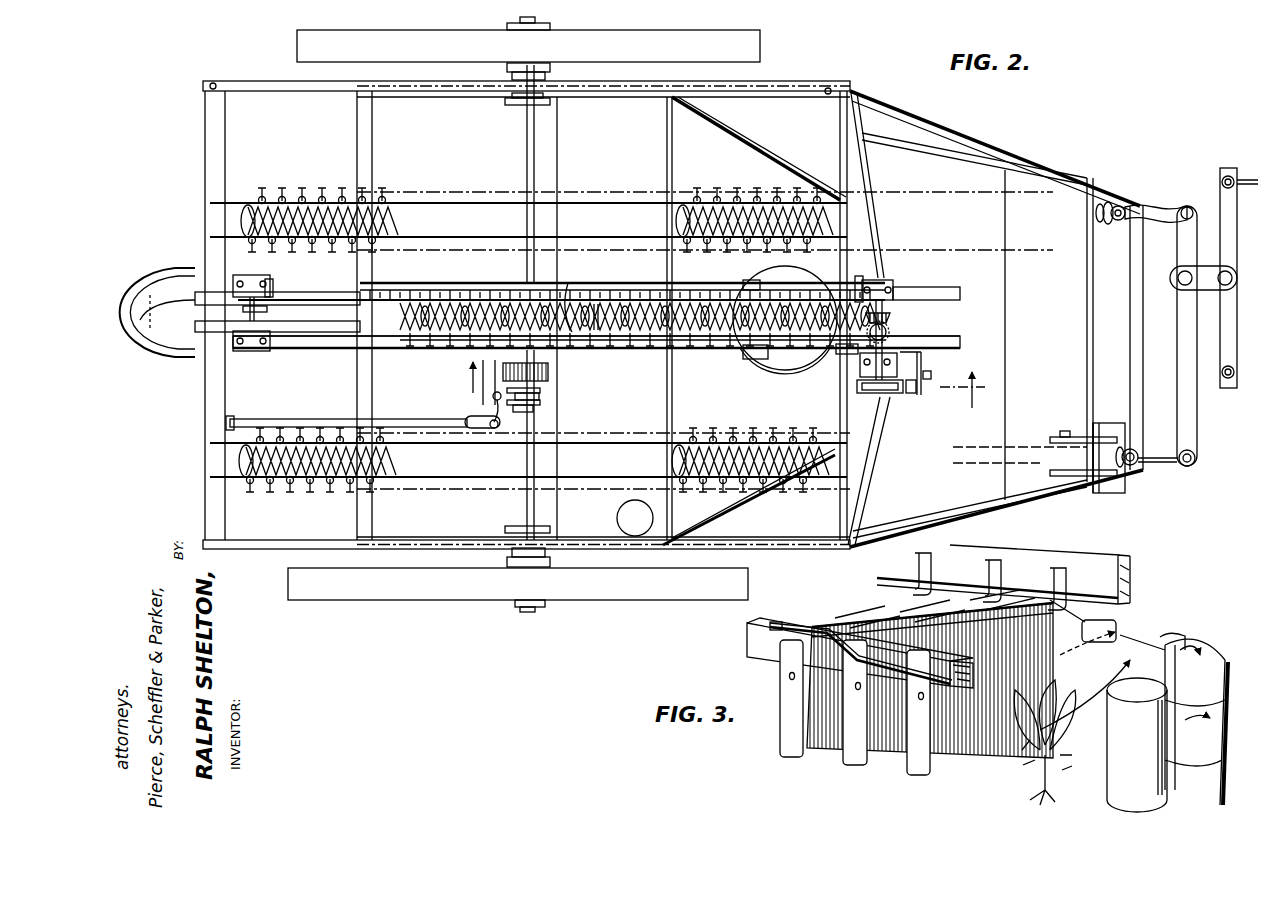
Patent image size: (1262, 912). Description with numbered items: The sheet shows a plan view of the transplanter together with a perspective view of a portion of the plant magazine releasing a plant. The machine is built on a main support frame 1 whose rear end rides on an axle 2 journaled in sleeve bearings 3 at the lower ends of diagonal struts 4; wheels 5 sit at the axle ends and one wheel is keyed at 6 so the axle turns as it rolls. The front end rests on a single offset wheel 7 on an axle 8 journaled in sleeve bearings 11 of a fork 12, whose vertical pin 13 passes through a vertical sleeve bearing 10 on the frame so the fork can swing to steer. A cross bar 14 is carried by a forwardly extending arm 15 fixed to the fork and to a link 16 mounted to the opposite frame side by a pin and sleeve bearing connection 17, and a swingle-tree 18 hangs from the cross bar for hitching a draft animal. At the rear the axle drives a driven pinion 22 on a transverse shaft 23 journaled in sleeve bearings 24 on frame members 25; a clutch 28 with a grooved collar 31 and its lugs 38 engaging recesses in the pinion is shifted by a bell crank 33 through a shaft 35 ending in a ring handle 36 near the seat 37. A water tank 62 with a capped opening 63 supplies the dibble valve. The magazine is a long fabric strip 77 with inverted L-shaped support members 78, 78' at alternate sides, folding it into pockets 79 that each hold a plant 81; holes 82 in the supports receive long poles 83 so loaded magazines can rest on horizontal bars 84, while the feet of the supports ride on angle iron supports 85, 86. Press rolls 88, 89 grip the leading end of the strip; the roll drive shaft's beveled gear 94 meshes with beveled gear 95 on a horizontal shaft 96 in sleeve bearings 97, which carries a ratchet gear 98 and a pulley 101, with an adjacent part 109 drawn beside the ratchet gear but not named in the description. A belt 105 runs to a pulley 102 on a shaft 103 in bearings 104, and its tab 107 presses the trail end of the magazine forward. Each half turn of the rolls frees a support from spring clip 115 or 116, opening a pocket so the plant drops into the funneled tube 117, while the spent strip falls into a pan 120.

In FIG. 2, the main support frame 1 is at (262, 83).
In FIG. 2, the axle 2 is at (526, 137).
In FIG. 2, the sleeve bearings 3 is at (507, 103).
In FIG. 2, the diagonal struts 4 is at (472, 376).
In FIG. 2, the wheels 5 is at (306, 39).
In FIG. 2, the key 6 is at (522, 610).
In FIG. 2, the single wheel 7 is at (986, 446).
In FIG. 2, the axle 8 is at (1063, 432).
In FIG. 2, the vertical sleeve bearing 10 is at (1108, 494).
In FIG. 2, the sleeve bearings 11 is at (1050, 438).
In FIG. 2, the fork 12 is at (1107, 423).
In FIG. 2, the vertical pin 13 is at (1134, 467).
In FIG. 2, the cross bar 14 is at (1177, 360).
In FIG. 2, the forwardly extending arm 15 is at (1158, 458).
In FIG. 2, the link 16 is at (1163, 208).
In FIG. 2, the pin and sleeve bearing connection 17 is at (1124, 205).
In FIG. 2, the swingle-tree 18 is at (1238, 215).
In FIG. 2, the driven pinion 22 is at (550, 372).
In FIG. 2, the transverse shaft 23 is at (527, 283).
In FIG. 2, the sleeve bearings 24 is at (546, 286).
In FIG. 2, the frame members 25 is at (418, 298).
In FIG. 2, the clutch 28 is at (478, 399).
In FIG. 2, the grooved collar 31 is at (542, 404).
In FIG. 2, the bell crank 33 is at (483, 409).
In FIG. 2, the shaft 35 is at (300, 417).
In FIG. 2, the ring handle 36 is at (238, 414).
In FIG. 2, the seat 37 is at (150, 345).
In FIG. 2, the lugs 38 is at (542, 390).
In FIG. 2, the water tank 62 is at (657, 413).
In FIG. 2, the capped opening 63 is at (619, 518).
In FIG. 2, the strip 77 is at (442, 315).
In FIG. 3, the strip 77 is at (850, 614).
In FIG. 2, the inverted L-shaped support member 78 is at (591, 342).
In FIG. 3, the inverted L-shaped support member 78 is at (988, 575).
In FIG. 2, the inverted L-shaped support member 78' is at (571, 425).
In FIG. 3, the inverted L-shaped support member 78' is at (770, 615).
In FIG. 2, the pockets 79 is at (596, 315).
In FIG. 3, the pockets 79 is at (821, 625).
In FIG. 2, the plant 81 is at (643, 316).
In FIG. 3, the plant 81 is at (1052, 752).
In FIG. 3, the holes 82 is at (789, 677).
In FIG. 2, the long poles 83 is at (212, 237).
In FIG. 2, the horizontal bars 84 is at (226, 184).
In FIG. 2, the angle iron support 85 is at (396, 283).
In FIG. 3, the angle iron support 85 is at (1118, 568).
In FIG. 2, the angle iron support 86 is at (396, 348).
In FIG. 3, the angle iron support 86 is at (747, 641).
In FIG. 2, the press roll 88 is at (860, 278).
In FIG. 3, the press roll 88 is at (1212, 651).
In FIG. 2, the press roll 89 is at (845, 354).
In FIG. 3, the press roll 89 is at (1118, 781).
In FIG. 2, the beveled gear 94 is at (893, 333).
In FIG. 2, the beveled gear 95 is at (891, 318).
In FIG. 2, the horizontal shaft 96 is at (921, 374).
In FIG. 2, the sleeve bearings 97 is at (884, 283).
In FIG. 2, the ratchet gear 98 is at (877, 394).
In FIG. 2, the pulley 101 is at (908, 287).
In FIG. 2, the pulley 102 is at (269, 286).
In FIG. 2, the shaft 103 is at (266, 330).
In FIG. 2, the bearings 104 is at (250, 276).
In FIG. 2, the belt 105 is at (322, 292).
In FIG. 2, the tab 107 is at (576, 298).
In FIG. 2, the pin 109 is at (915, 393).
In FIG. 2, the spring clip 115 is at (792, 279).
In FIG. 2, the spring clip 116 is at (790, 360).
In FIG. 2, the funneled tube 117 is at (761, 352).
In FIG. 2, the pan 120 is at (966, 170).